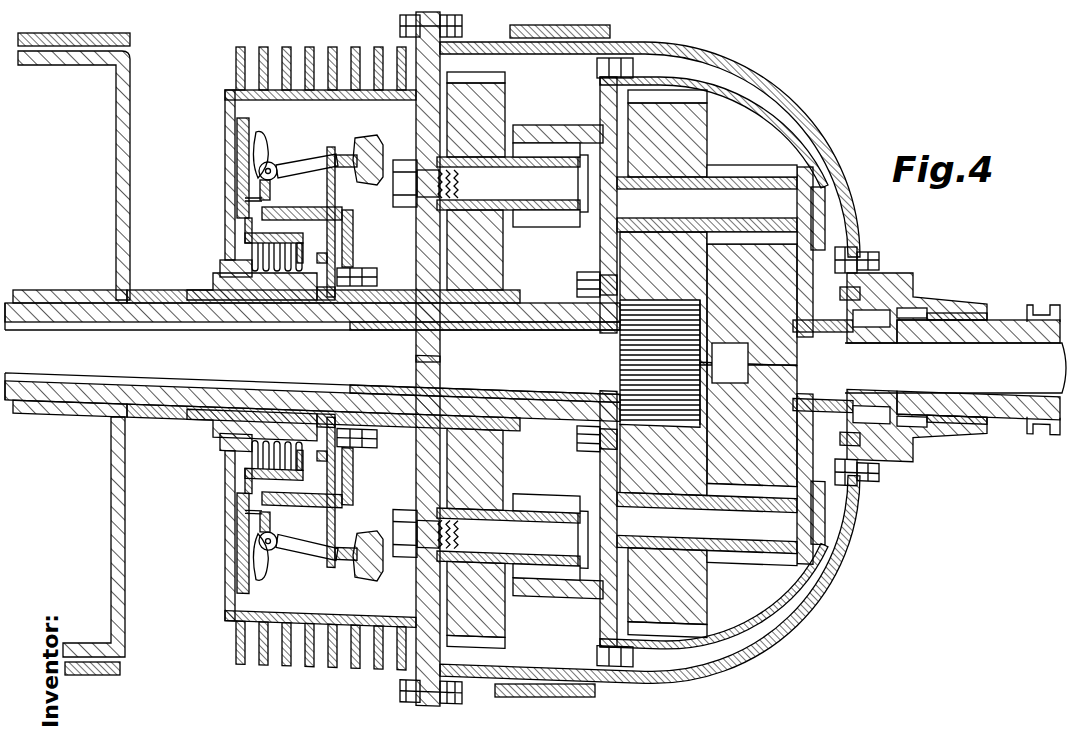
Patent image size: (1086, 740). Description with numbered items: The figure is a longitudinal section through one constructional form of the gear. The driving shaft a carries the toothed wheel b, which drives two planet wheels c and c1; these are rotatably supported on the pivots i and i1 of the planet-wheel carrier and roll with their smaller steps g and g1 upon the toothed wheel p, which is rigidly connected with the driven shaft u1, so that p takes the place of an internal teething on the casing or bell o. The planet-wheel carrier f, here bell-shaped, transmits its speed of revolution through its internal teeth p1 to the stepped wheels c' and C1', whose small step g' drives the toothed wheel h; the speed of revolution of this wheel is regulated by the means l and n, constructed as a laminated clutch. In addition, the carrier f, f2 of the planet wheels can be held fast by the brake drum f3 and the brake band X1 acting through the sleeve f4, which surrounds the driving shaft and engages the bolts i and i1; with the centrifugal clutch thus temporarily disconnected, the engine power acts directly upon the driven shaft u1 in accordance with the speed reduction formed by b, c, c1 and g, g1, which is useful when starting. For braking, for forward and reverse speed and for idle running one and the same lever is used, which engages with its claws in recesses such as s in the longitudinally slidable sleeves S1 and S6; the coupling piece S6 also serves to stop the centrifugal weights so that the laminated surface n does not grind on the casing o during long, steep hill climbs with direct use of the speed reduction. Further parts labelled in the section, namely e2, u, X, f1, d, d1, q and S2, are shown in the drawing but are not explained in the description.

The brake band X1 is at (95, 36).
The brake drum f3 is at (116, 162).
The sleeve f4 is at (340, 324).
The toothed wheel h is at (473, 294).
The bearing sleeve e2 is at (430, 413).
The driving shaft a is at (312, 362).
The toothed wheel b is at (628, 344).
The toothed wheel p is at (785, 305).
The key u is at (730, 363).
The planet wheel c is at (679, 133).
The planet wheel c1 is at (735, 582).
The pivot i is at (707, 204).
The pivot i1 is at (707, 522).
The smaller step g is at (752, 190).
The smaller step g1 is at (755, 560).
The casing o is at (783, 97).
The planet-wheel carrier f is at (778, 119).
The plate X is at (574, 26).
The cover plate f1 is at (431, 214).
The stepped wheel c' is at (495, 181).
The stepped wheel C1' is at (490, 539).
The cylinder d is at (490, 183).
The cylinder d1 is at (490, 537).
The internal teeth p1 is at (553, 142).
The small step g' is at (546, 361).
The carrier part f2 is at (600, 258).
The finned housing q is at (226, 172).
The laminated clutch surface n is at (250, 120).
The regulating means l is at (350, 246).
The longitudinally slidable sleeve S1 is at (197, 280).
The coupling piece S6 is at (208, 438).
The driven shaft u1 is at (955, 368).
The bearing housing S2 is at (920, 316).
The recess s is at (1032, 305).